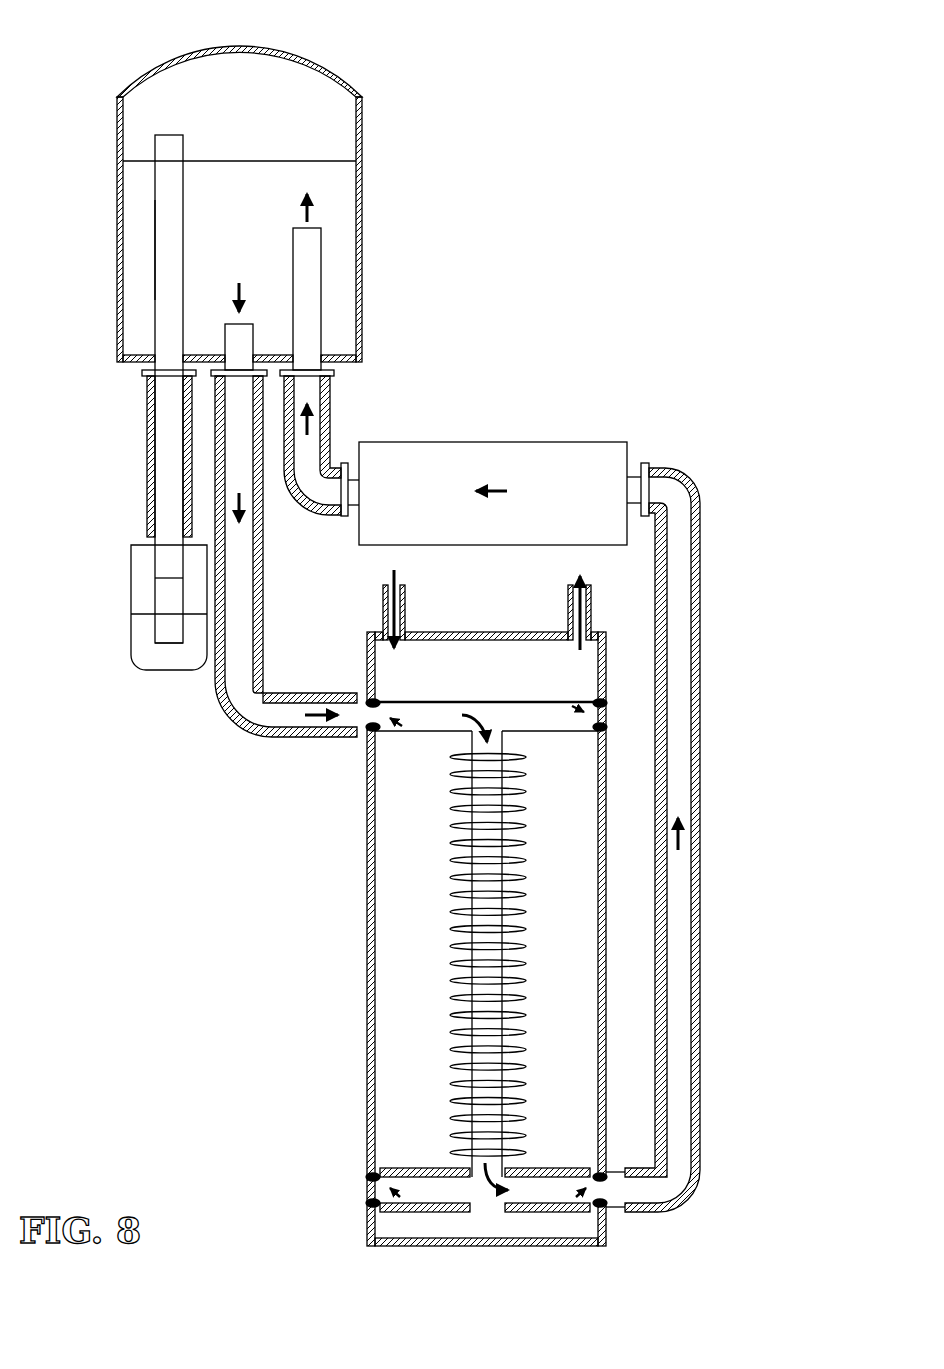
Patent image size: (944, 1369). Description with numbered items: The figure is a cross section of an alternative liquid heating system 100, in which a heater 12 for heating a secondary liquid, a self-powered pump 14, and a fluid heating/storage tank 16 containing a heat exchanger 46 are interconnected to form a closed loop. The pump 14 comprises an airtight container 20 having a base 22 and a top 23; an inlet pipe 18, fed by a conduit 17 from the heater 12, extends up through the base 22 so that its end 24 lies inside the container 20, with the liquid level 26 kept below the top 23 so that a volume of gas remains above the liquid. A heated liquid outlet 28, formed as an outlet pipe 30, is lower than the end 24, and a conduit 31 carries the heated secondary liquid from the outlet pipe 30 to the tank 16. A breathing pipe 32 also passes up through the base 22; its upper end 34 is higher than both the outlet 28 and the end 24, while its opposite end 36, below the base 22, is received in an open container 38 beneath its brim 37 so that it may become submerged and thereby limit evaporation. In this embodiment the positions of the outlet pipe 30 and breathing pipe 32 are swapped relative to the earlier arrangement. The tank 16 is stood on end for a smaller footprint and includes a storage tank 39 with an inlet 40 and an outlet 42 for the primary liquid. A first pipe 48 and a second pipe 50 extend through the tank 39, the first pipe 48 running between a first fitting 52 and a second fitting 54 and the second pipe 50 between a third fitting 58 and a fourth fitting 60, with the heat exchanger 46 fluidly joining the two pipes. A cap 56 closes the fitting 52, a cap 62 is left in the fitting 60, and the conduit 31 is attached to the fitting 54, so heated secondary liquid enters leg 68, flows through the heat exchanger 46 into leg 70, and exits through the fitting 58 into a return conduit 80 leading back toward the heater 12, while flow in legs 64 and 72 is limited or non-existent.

The heater 12 is at (546, 442).
The self-powered pump 14 is at (78, 170).
The fluid heating and storage tank 16 is at (322, 980).
The vapor pipe 17 is at (312, 447).
The inlet pipe 18 is at (307, 291).
The airtight container 20 is at (150, 73).
The base 22 is at (344, 356).
The top 23 is at (240, 48).
The end of inlet pipe 24 is at (310, 225).
The liquid level 26 is at (301, 160).
The heated liquid outlet 28 is at (234, 322).
The outlet pipe 30 is at (240, 335).
The conduit 31 is at (242, 572).
The breathing pipe 32 is at (165, 238).
The end of breathing pipe 34 is at (166, 135).
The opposite end of breathing pipe 36 is at (165, 660).
The brim 37 is at (132, 543).
The open container 38 is at (132, 614).
The storage tank 39 is at (368, 882).
The inlet 40 is at (405, 612).
The outlet 42 is at (568, 612).
The heat exchanger 46 is at (442, 885).
The first pipe 48 is at (486, 701).
The second pipe 50 is at (490, 1205).
The first fitting 52 is at (606, 725).
The second fitting 54 is at (380, 720).
The cap 56 is at (572, 704).
The third fitting 58 is at (600, 1205).
The fourth fitting 60 is at (385, 1205).
The cap 62 is at (372, 1183).
The leg 64 is at (564, 722).
The leg 68 is at (405, 722).
The leg 70 is at (560, 1173).
The leg 72 is at (400, 1173).
The return conduit 80 is at (678, 549).
The liquid heating system 100 is at (541, 255).